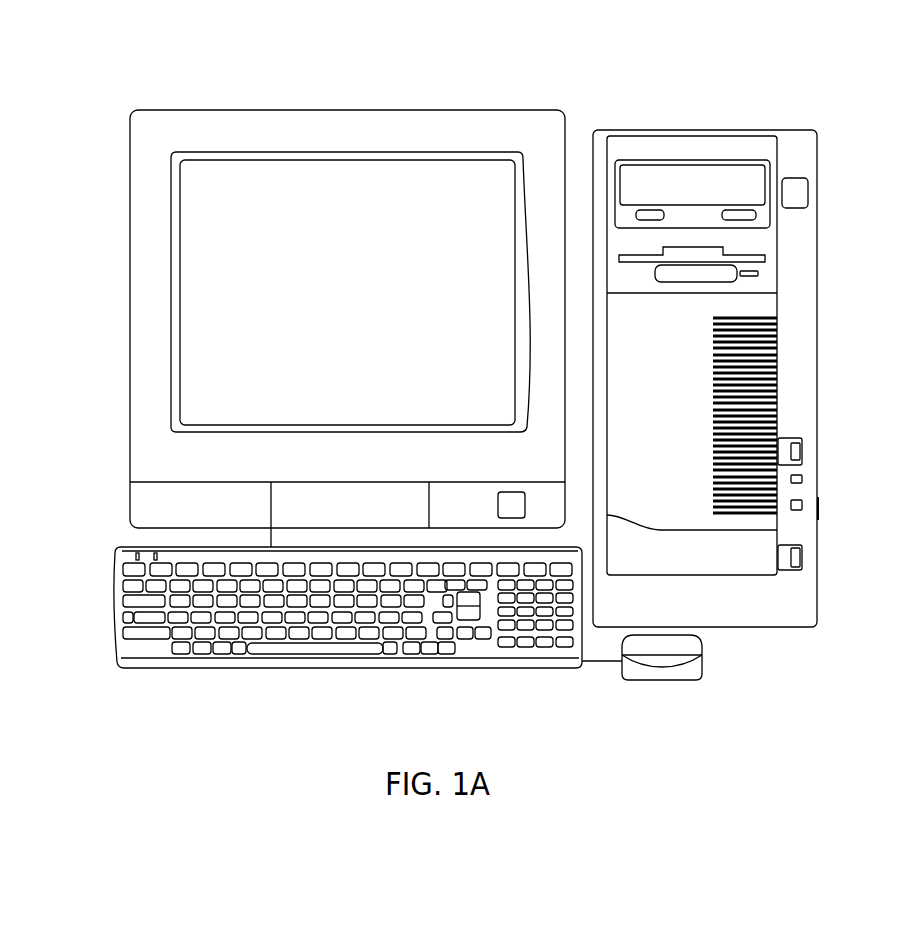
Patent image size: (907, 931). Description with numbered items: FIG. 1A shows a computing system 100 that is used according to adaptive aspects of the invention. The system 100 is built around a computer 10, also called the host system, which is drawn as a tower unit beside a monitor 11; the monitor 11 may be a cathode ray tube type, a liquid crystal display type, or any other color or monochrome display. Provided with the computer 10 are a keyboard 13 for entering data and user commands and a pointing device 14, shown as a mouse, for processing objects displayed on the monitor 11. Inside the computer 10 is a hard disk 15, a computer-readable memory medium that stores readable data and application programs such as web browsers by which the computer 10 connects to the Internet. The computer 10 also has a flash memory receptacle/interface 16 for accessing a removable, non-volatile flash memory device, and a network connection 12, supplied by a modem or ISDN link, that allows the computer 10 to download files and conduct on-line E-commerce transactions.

The computing system 100 is at (135, 713).
The computer 10 is at (757, 128).
The monitor 11 is at (382, 157).
The network connection 12 is at (797, 508).
The keyboard 13 is at (213, 668).
The pointing device 14 is at (663, 658).
The hard disk 15 is at (645, 212).
The flash memory receptacle/interface 16 is at (803, 479).